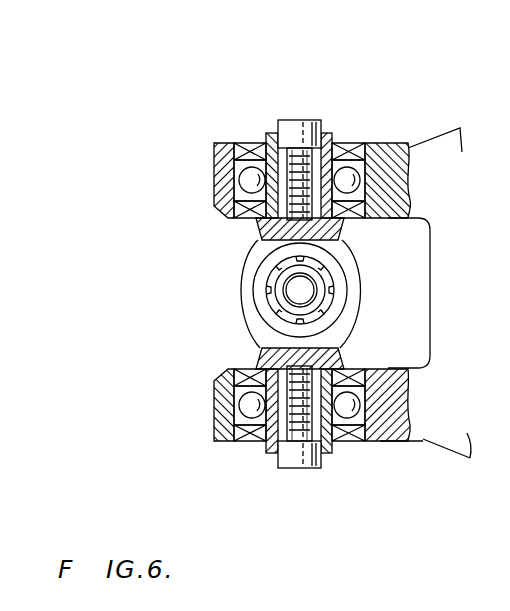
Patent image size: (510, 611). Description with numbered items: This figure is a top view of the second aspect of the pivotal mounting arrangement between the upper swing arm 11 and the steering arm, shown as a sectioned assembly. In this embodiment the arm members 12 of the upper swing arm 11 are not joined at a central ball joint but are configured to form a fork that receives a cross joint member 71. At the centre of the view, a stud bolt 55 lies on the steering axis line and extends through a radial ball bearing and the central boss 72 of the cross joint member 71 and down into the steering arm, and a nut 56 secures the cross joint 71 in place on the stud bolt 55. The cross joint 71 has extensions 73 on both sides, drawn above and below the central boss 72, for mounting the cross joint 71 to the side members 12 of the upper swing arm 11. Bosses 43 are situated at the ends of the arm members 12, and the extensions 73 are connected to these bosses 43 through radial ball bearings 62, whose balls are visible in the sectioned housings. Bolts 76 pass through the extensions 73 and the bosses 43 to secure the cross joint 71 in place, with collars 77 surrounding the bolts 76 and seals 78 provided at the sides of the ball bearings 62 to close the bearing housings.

The upper swing arm 11 is at (445, 124).
The arm members 12 is at (400, 145).
The bosses 43 is at (220, 164).
The stud bolt 55 is at (294, 292).
The nut 56 is at (318, 310).
The radial ball bearings 62 is at (243, 182).
The cross joint member 71 is at (233, 308).
The central boss 72 is at (356, 284).
The extensions 73 is at (258, 219).
The bolts 76 is at (296, 131).
The collars 77 is at (338, 146).
The seals 78 is at (248, 145).